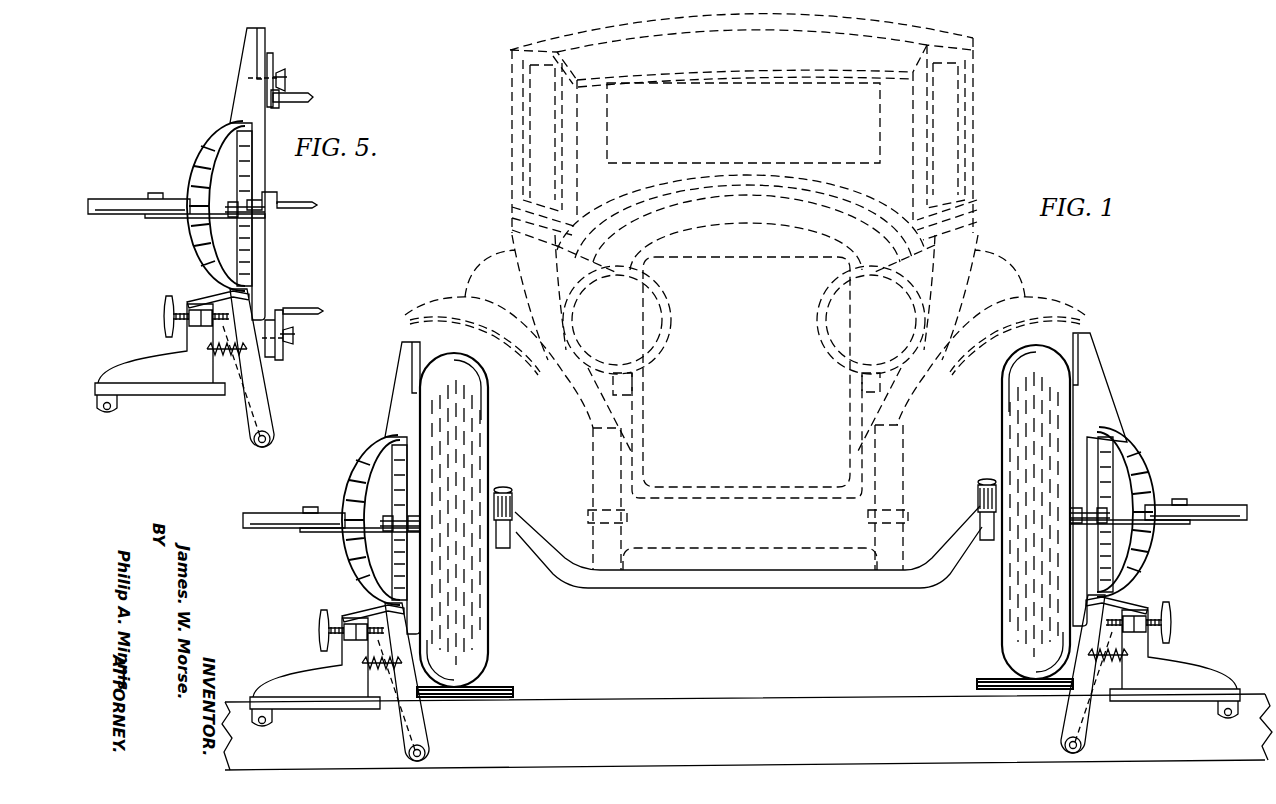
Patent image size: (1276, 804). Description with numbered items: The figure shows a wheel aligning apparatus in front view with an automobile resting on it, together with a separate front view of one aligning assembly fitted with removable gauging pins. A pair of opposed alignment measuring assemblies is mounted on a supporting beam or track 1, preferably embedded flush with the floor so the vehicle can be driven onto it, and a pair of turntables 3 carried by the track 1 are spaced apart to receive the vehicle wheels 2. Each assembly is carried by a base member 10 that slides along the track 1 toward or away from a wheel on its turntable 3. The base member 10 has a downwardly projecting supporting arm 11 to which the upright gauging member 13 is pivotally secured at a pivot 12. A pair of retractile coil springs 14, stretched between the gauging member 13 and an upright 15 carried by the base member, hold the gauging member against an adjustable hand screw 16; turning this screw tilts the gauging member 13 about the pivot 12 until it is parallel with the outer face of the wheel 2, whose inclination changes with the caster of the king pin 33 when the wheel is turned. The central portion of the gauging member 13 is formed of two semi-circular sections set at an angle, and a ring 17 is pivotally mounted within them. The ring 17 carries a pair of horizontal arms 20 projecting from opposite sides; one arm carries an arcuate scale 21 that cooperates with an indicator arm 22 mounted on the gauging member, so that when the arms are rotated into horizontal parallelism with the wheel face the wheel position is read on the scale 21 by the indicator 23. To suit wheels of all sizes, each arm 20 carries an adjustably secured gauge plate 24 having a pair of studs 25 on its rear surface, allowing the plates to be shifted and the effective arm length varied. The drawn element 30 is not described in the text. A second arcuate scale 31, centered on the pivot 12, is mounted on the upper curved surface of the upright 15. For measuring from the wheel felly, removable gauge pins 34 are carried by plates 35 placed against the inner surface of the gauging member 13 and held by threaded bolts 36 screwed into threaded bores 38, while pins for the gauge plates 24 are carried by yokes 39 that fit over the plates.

In FIG. 1, the supporting beam or track 1 is at (836, 704).
In FIG. 1, the vehicle wheel 2 is at (477, 415).
In FIG. 1, the turntable 3 is at (493, 687).
In FIG. 1, the base member 10 is at (335, 704).
In FIG. 5, the base member 10 is at (183, 390).
In FIG. 1, the supporting arm 11 is at (383, 717).
In FIG. 1, the pivot 12 is at (425, 746).
In FIG. 1, the upright gauging member 13 is at (400, 410).
In FIG. 5, the upright gauging member 13 is at (243, 93).
In FIG. 1, the retractile coil spring 14 is at (380, 657).
In FIG. 1, the upright 15 is at (343, 667).
In FIG. 1, the adjustable hand screw 16 is at (320, 612).
In FIG. 5, the adjustable hand screw 16 is at (168, 296).
In FIG. 1, the ring 17 is at (393, 497).
In FIG. 5, the ring 17 is at (243, 174).
In FIG. 1, the horizontal arm 20 is at (401, 558).
In FIG. 5, the horizontal arm 20 is at (247, 232).
In FIG. 1, the arcuate scale 21 is at (282, 527).
In FIG. 1, the indicator arm 22 is at (330, 531).
In FIG. 1, the indicator 23 is at (323, 517).
In FIG. 1, the gauge plate 24 is at (418, 517).
In FIG. 5, the gauge plate 24 is at (272, 215).
In FIG. 1, the stud 25 is at (413, 527).
In FIG. 1, the arcuate segment 30 is at (378, 493).
In FIG. 5, the arcuate segment 30 is at (227, 200).
In FIG. 1, the second arcuate scale 31 is at (360, 612).
In FIG. 1, the king pin 33 is at (508, 491).
In FIG. 5, the removable gauge pin 34 is at (297, 97).
In FIG. 5, the plate 35 is at (272, 52).
In FIG. 5, the threaded bolt 36 is at (280, 77).
In FIG. 1, the threaded bore 38 is at (407, 393).
In FIG. 5, the threaded bore 38 is at (253, 78).
In FIG. 5, the yoke 39 is at (277, 192).